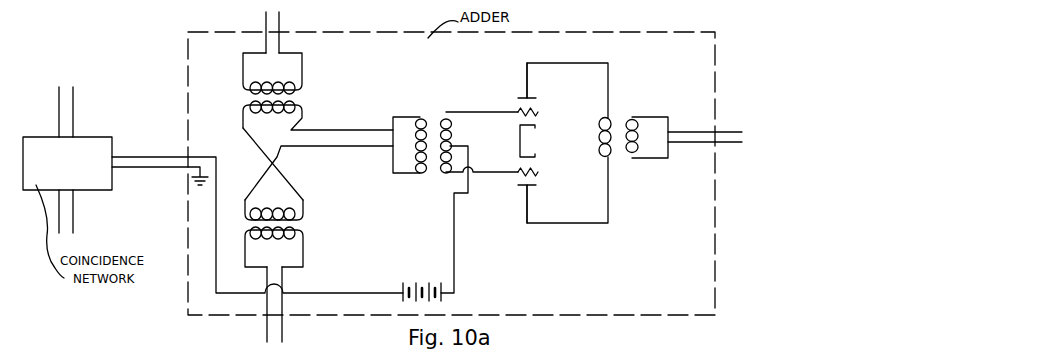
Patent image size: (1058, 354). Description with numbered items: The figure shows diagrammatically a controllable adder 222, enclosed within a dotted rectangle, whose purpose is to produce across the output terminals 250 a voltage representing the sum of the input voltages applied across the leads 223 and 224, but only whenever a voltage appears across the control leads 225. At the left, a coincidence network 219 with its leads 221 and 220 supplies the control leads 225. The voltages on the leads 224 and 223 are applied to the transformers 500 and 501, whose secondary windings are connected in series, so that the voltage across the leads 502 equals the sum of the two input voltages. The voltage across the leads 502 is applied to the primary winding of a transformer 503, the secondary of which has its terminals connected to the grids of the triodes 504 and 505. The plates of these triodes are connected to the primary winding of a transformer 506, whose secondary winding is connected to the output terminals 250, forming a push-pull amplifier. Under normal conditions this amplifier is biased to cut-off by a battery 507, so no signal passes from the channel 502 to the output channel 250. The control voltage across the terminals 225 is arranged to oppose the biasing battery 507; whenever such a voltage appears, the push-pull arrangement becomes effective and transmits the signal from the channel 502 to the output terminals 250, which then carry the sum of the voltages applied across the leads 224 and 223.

The coincidence network 219 is at (67, 163).
The input leads 220 is at (68, 224).
The input leads 221 is at (68, 102).
The adder 222 is at (650, 38).
The input leads 223 is at (277, 340).
The input leads 224 is at (278, 21).
The control leads 225 is at (168, 158).
The output terminals 250 is at (723, 138).
The transformer 500 is at (285, 100).
The transformer 501 is at (300, 223).
The leads 502 is at (352, 140).
The transformer 503 is at (430, 125).
The triode 504 is at (530, 103).
The triode 505 is at (518, 184).
The transformer 506 is at (620, 137).
The battery 507 is at (424, 285).